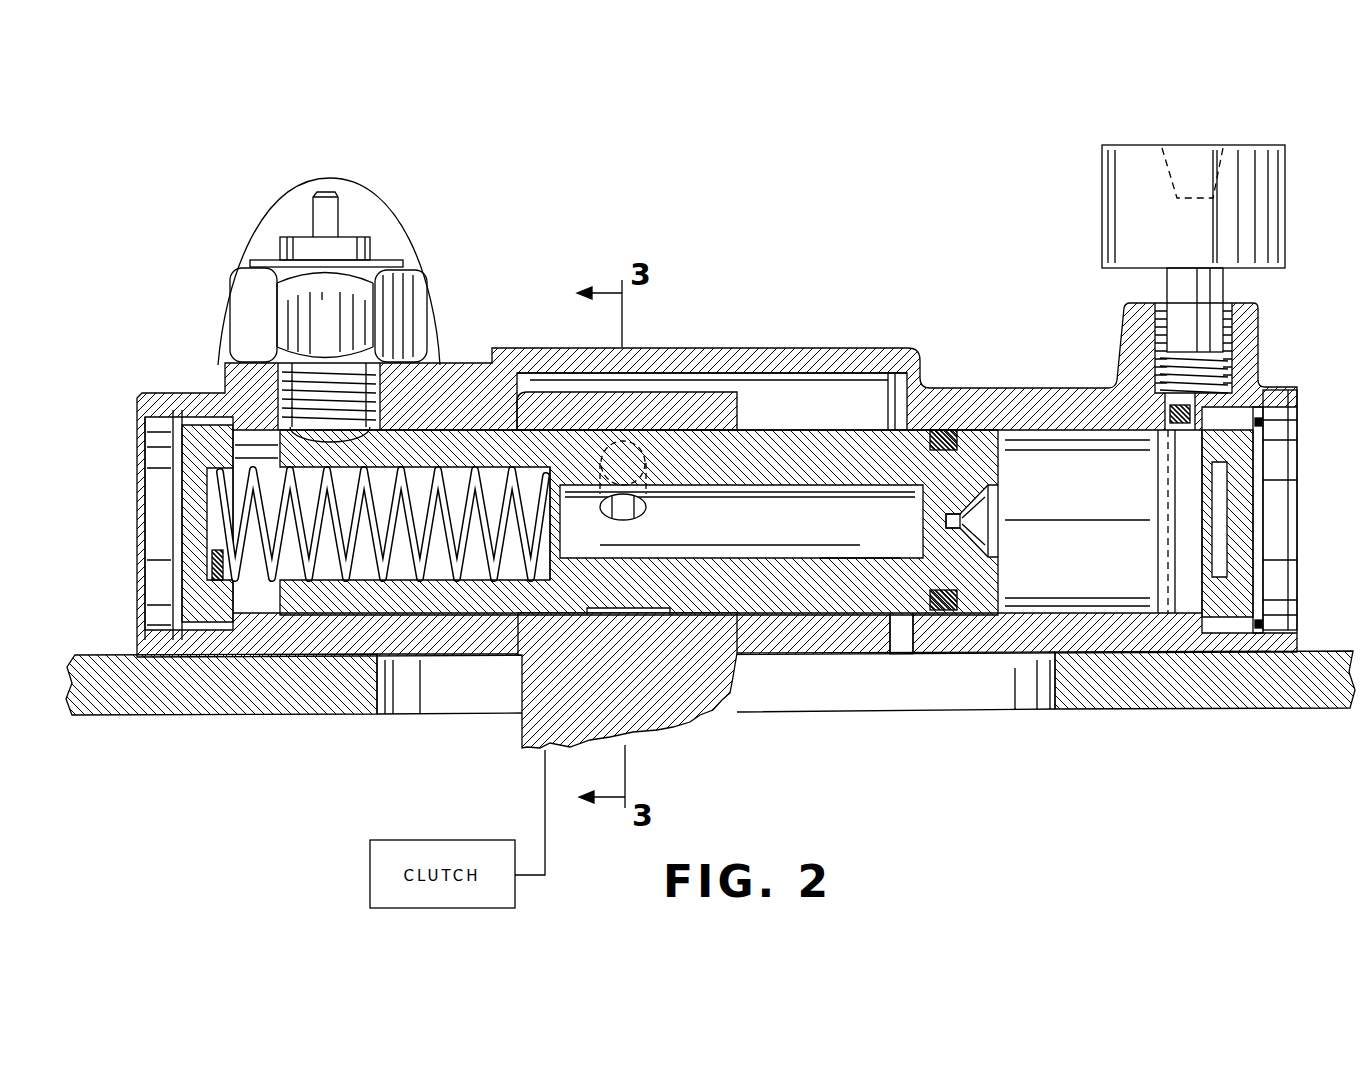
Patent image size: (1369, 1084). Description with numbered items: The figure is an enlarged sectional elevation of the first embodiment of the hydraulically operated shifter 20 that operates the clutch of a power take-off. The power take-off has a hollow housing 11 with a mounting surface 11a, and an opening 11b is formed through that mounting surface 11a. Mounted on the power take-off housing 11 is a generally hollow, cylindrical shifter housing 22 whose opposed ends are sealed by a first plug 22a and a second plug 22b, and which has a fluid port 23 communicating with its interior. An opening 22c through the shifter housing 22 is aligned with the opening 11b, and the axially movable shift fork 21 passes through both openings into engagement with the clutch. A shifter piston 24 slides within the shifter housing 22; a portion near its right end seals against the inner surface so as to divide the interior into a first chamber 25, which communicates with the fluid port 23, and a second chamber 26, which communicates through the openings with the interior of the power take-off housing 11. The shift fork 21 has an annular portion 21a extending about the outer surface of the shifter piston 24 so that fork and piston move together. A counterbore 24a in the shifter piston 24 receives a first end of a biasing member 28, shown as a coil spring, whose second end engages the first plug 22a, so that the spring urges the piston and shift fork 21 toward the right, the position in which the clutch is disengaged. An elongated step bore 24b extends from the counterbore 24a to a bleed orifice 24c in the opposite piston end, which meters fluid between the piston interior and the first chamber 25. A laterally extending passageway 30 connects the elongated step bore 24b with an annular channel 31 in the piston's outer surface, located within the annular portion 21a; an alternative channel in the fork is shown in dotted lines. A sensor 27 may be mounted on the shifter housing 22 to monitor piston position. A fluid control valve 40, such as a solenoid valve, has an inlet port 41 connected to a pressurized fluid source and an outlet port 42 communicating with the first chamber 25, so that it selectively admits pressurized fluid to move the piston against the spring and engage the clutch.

The power take-off housing 11 is at (118, 697).
The mounting surface 11a is at (280, 715).
The opening 11b is at (1058, 683).
The hydraulically operated shifter 20 is at (750, 236).
The shift fork 21 is at (657, 703).
The annular portion 21a is at (713, 400).
The shifter housing 22 is at (482, 377).
The first plug 22a is at (217, 607).
The second plug 22b is at (1228, 605).
The opening 22c is at (905, 633).
The fluid port 23 is at (1168, 412).
The shifter piston 24 is at (780, 435).
The counterbore 24a is at (435, 565).
The elongated step bore 24b is at (823, 540).
The bleed orifice 24c is at (960, 522).
The first chamber 25 is at (1100, 536).
The second chamber 26 is at (826, 414).
The sensor 27 is at (355, 247).
The biasing member 28 is at (255, 473).
The laterally extending passageway 30 is at (632, 510).
The annular channel 31 is at (635, 440).
The fluid control valve 40 is at (1113, 172).
The inlet port 41 is at (1183, 150).
The outlet port 42 is at (1180, 282).